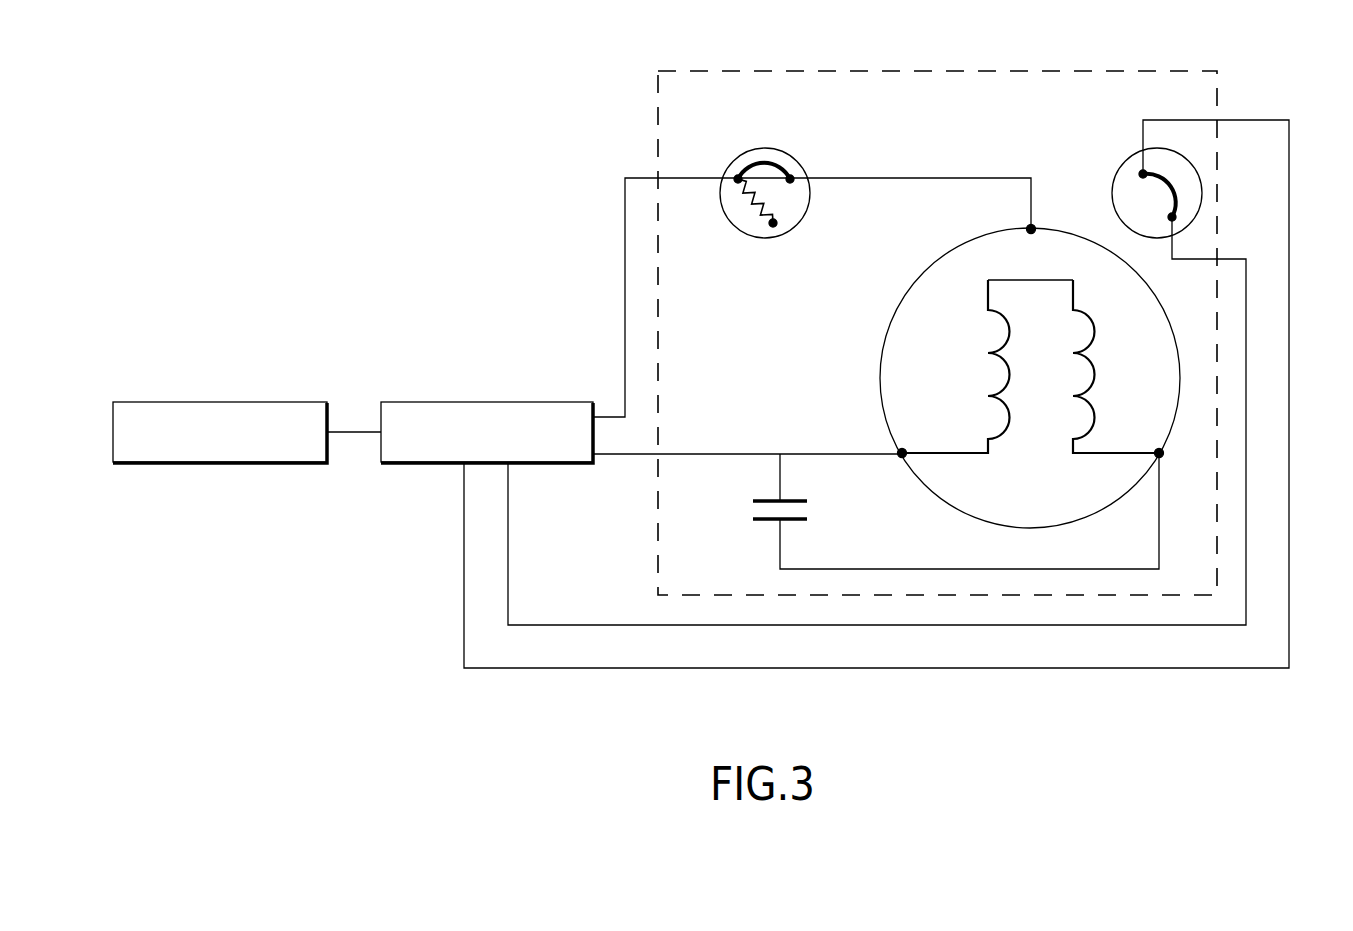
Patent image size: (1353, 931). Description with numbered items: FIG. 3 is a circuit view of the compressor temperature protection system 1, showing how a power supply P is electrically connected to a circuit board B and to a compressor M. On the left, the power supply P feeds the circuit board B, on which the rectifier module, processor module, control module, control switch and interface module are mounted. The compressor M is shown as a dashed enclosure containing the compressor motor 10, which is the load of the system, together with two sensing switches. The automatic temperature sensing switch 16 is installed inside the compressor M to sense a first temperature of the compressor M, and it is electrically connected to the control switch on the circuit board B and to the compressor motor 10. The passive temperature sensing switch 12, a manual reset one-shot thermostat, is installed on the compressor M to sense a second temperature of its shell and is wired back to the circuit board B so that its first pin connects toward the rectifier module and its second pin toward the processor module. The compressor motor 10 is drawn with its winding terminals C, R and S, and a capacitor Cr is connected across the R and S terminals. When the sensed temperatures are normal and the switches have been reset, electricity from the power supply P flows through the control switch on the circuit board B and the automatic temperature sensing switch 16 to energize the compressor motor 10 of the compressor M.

The compressor temperature protection system 1 is at (236, 158).
The compressor M is at (661, 155).
The power supply P is at (233, 402).
The circuit board B is at (465, 402).
The automatic temperature sensing switch 16 is at (757, 149).
The passive temperature sensing switch 12 is at (1128, 160).
The compressor motor 10 is at (901, 301).
The common terminal C is at (1044, 214).
The run terminal R is at (890, 472).
The start terminal S is at (1174, 472).
The run capacitor Cr is at (760, 514).